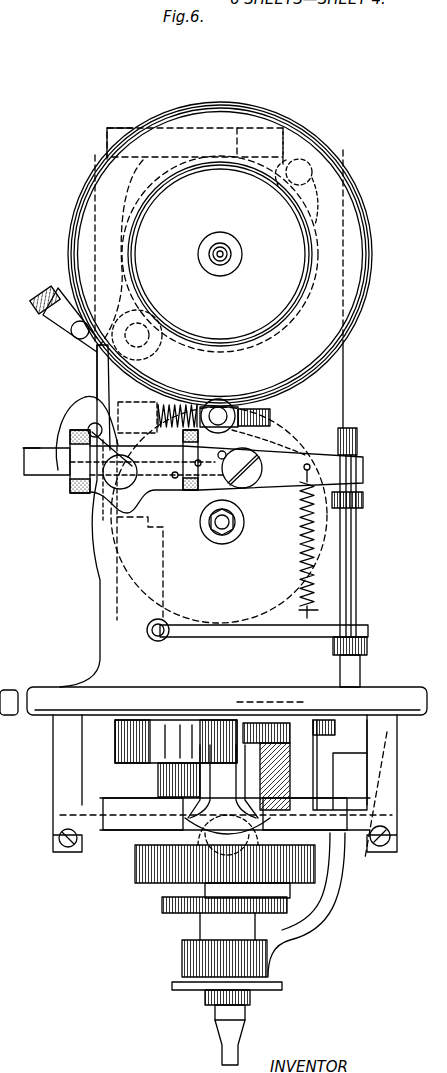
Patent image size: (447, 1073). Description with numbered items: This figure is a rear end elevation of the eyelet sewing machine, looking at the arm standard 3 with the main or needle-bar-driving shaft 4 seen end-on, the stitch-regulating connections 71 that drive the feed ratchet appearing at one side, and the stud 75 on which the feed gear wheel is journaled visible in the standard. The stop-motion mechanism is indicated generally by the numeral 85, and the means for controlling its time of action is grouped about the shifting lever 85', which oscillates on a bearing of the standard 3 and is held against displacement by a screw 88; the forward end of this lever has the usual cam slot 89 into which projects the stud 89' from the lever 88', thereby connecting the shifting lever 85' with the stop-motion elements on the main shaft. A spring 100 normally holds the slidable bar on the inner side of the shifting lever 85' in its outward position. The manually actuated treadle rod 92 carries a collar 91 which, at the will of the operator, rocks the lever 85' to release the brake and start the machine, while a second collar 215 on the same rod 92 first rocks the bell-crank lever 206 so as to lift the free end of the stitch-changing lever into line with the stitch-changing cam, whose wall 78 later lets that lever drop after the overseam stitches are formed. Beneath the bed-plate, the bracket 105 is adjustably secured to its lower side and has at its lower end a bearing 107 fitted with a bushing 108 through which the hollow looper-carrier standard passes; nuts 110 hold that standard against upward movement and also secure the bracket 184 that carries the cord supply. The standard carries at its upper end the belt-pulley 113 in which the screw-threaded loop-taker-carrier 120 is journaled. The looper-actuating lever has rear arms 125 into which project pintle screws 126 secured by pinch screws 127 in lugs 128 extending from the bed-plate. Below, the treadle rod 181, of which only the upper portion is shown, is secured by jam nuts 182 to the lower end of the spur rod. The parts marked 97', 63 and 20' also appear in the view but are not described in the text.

The main or needle-bar-driving shaft 4 is at (236, 254).
The pin 97' is at (321, 186).
The stitch-regulating connections 71 is at (50, 292).
The lever 88' is at (92, 372).
The frame 63 is at (20, 414).
The spring 100 is at (156, 424).
The stop-motion mechanism 85 is at (254, 416).
The shifting lever 85' is at (276, 443).
The standard 3 is at (350, 413).
The collar 91 is at (365, 500).
The cam slot 89 is at (191, 458).
The stud 89' is at (90, 491).
The screw 88 is at (245, 481).
The stud 75 is at (236, 525).
The wall 78 is at (219, 540).
The spring 20' is at (293, 541).
The bell-crank lever 206 is at (265, 638).
The collar 215 is at (368, 646).
The treadle rod 92 is at (362, 674).
The lugs 128 is at (55, 748).
The belt-pulley 113 is at (285, 738).
The loop-taker-carrier 120 is at (284, 760).
The pintle screws 126 is at (390, 798).
The arms 125 is at (303, 808).
The pinch screws 127 is at (56, 845).
The bracket 105 is at (325, 942).
The bushing 108 is at (182, 925).
The bearing 107 is at (182, 960).
The bracket 184 is at (172, 986).
The nuts 110 is at (270, 993).
The jam nuts 182 is at (246, 1012).
The treadle rod 181 is at (238, 1040).